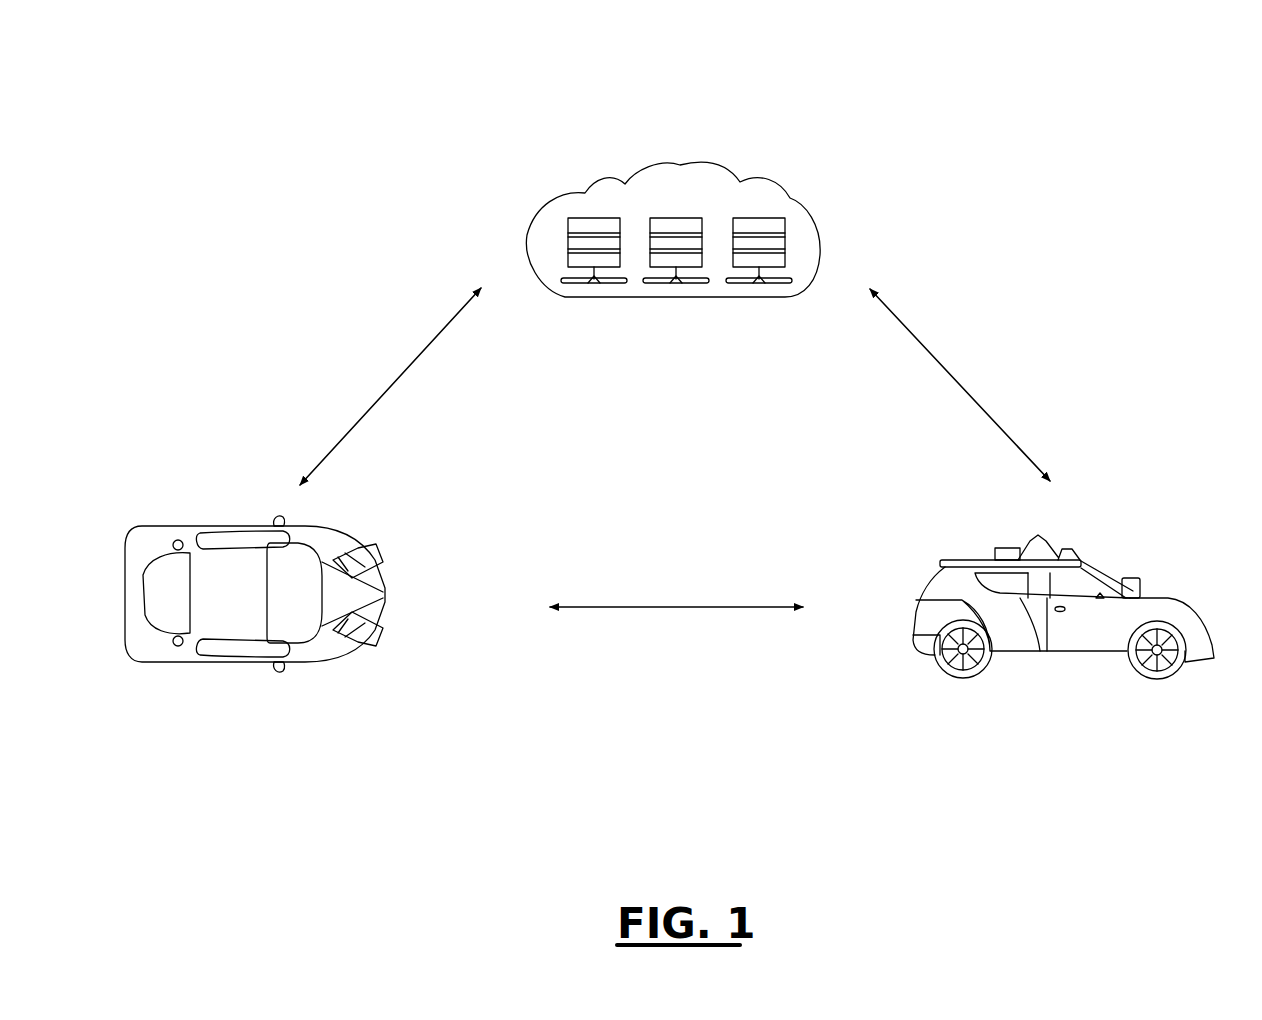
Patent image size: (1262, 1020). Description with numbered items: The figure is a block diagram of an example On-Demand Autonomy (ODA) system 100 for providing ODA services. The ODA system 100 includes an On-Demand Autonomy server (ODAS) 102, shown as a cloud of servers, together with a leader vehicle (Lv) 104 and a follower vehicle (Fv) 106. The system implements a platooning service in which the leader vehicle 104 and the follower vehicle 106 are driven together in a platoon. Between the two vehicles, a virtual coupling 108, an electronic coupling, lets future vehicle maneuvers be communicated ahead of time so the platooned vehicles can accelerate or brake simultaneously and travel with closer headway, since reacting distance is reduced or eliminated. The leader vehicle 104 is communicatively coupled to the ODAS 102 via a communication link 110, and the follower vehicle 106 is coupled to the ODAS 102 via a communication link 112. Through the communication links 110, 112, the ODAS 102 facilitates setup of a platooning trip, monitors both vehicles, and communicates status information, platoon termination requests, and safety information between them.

The On-Demand Autonomy (ODA) system 100 is at (812, 74).
The On-Demand Autonomy server (ODAS) 102 is at (629, 181).
The leader vehicle (Lv) 104 is at (945, 561).
The follower vehicle (Fv) 106 is at (226, 527).
The virtual coupling 108 is at (646, 604).
The communication link 110 is at (962, 375).
The communication link 112 is at (369, 401).